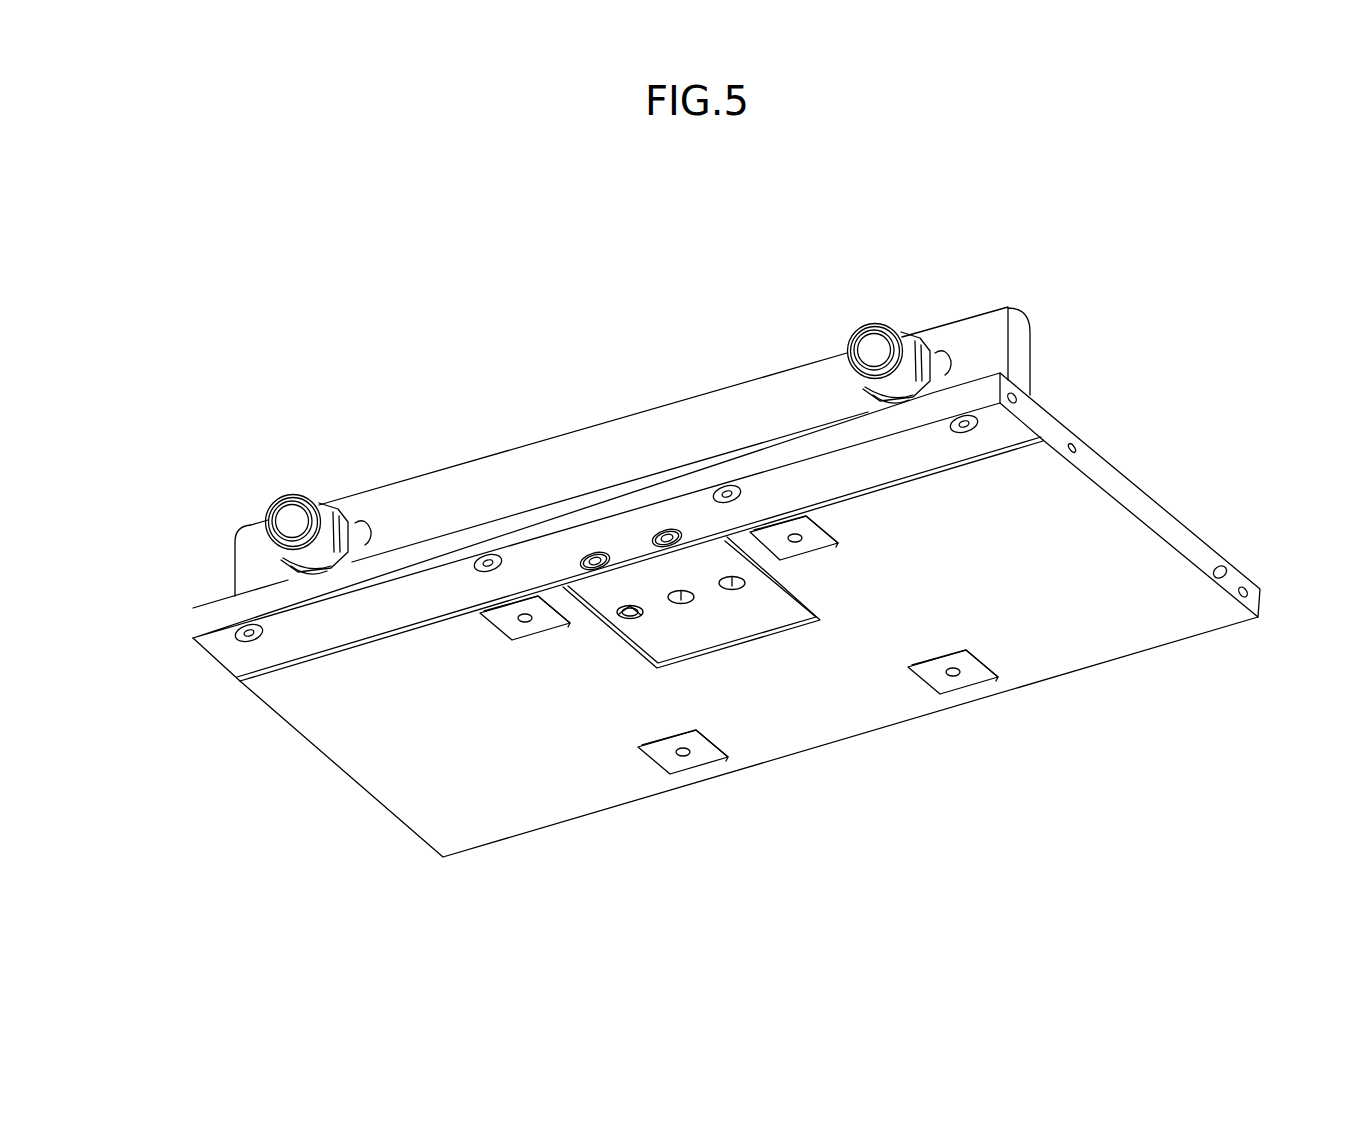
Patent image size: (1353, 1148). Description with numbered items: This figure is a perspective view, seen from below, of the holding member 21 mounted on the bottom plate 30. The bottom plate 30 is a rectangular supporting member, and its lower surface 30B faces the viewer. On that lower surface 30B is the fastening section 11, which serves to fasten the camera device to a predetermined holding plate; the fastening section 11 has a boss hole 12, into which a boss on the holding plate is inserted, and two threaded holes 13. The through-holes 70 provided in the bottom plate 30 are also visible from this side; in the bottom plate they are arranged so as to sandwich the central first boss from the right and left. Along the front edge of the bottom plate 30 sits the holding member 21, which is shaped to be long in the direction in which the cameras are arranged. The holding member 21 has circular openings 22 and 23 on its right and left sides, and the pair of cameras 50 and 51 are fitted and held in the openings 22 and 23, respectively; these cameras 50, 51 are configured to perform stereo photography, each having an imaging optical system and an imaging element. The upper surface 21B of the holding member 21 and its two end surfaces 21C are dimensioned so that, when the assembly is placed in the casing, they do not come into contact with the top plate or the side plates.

The fastening section 11 is at (753, 689).
The boss hole 12 is at (682, 603).
The threaded holes 13 is at (630, 619).
The holding member 21 is at (644, 450).
The upper surface 21B is at (723, 413).
The end surfaces 21C is at (235, 572).
The circular opening 22 is at (362, 521).
The circular opening 23 is at (940, 355).
The bottom plate 30 is at (726, 615).
The lower surface 30B is at (1078, 623).
The camera 50 is at (318, 494).
The camera 51 is at (873, 315).
The through-holes 70 is at (577, 552).